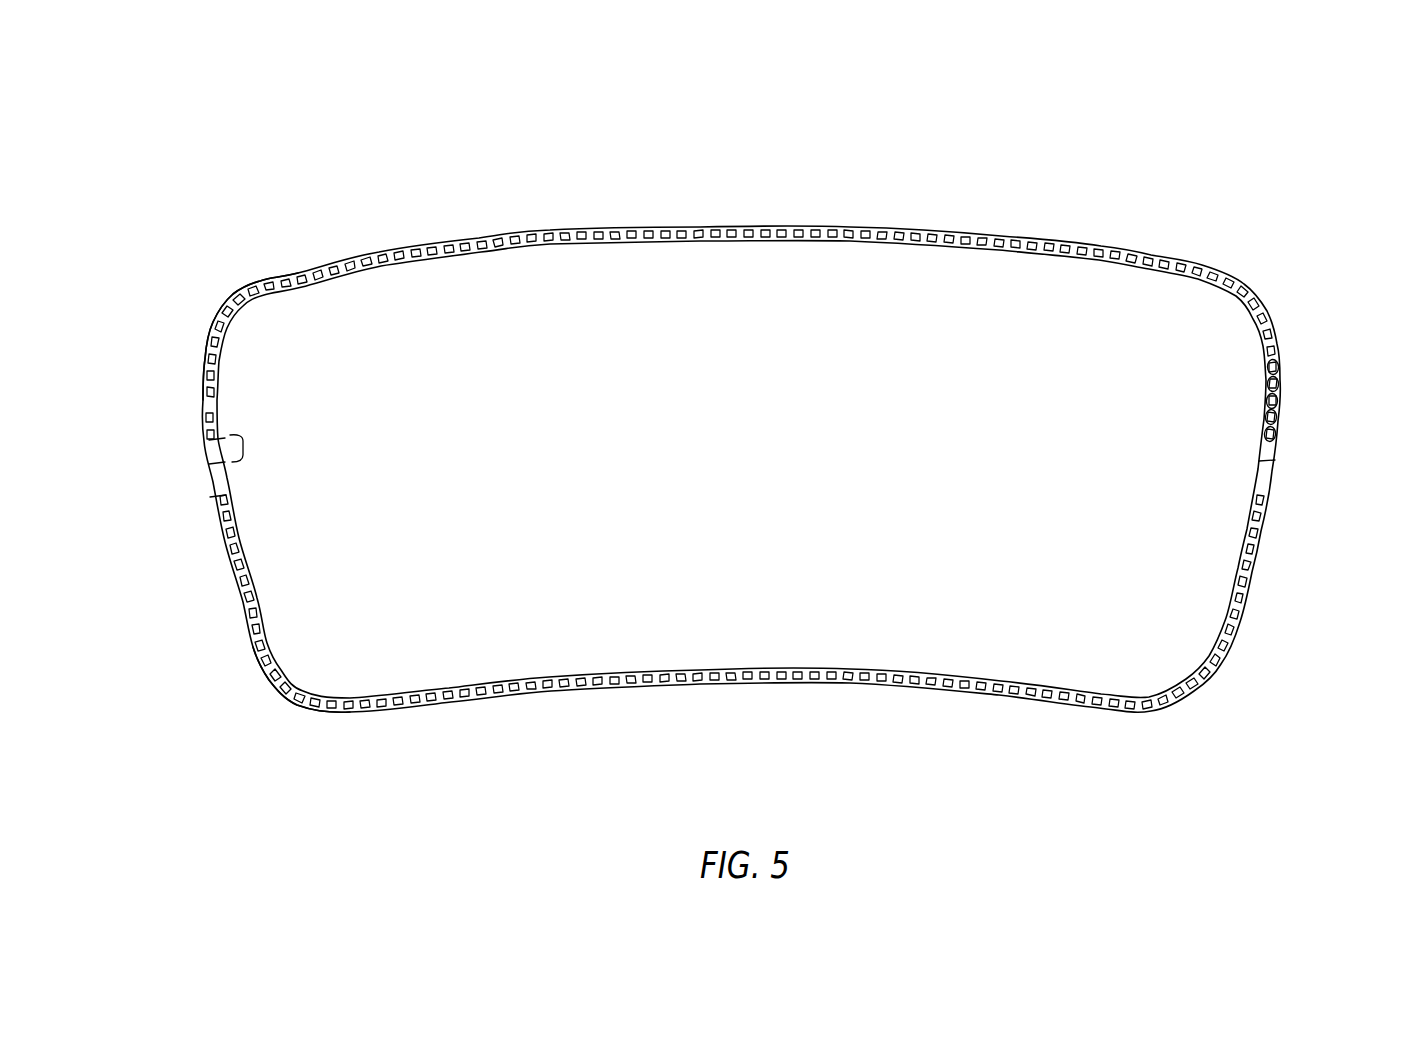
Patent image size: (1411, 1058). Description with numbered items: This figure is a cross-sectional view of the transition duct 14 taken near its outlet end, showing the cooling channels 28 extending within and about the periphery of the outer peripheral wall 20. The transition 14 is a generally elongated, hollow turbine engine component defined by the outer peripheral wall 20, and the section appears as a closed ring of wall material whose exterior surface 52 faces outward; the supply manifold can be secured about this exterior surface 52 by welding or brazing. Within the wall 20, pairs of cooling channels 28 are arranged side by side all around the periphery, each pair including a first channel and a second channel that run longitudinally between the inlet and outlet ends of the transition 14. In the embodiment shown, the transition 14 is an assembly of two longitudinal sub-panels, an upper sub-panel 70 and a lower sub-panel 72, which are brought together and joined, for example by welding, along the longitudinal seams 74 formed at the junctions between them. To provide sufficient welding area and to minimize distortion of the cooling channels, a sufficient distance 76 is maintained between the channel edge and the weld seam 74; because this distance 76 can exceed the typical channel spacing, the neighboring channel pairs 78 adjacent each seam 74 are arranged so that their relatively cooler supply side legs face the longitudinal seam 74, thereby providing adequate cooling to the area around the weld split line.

The transition duct 14 is at (476, 110).
The outer peripheral wall 20 is at (1264, 305).
The cooling channels 28 is at (1283, 387).
The exterior surface 52 is at (1137, 247).
The upper sub-panel 70 is at (232, 296).
The lower sub-panel 72 is at (281, 688).
The longitudinal seams 74 is at (215, 464).
The distance 76 is at (243, 447).
The neighboring channel pairs 78 is at (213, 440).